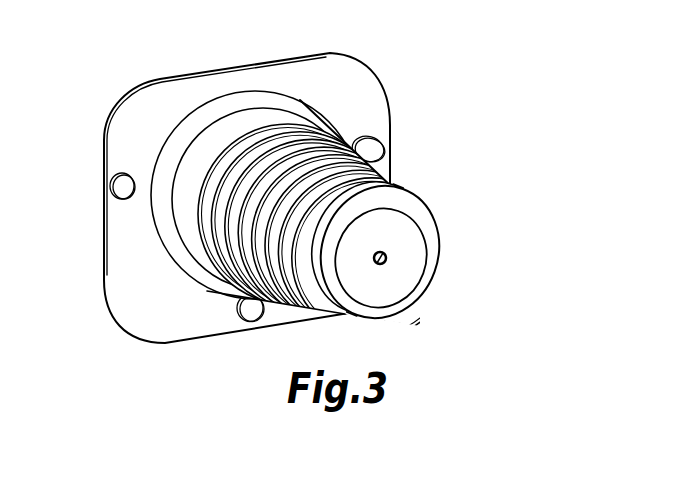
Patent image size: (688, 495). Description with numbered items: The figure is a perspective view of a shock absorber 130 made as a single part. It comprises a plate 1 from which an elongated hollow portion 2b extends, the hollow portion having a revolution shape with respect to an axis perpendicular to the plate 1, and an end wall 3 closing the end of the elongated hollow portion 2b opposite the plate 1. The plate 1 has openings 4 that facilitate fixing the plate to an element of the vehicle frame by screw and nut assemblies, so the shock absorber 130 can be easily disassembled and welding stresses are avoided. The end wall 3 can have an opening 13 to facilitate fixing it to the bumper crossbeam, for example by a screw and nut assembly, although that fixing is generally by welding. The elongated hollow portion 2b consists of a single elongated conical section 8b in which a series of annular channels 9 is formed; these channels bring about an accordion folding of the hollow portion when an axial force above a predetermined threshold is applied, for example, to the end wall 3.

The plate 1 is at (216, 196).
The shock absorber 130 is at (258, 218).
The elongated hollow portion 2b is at (405, 182).
The end wall 3 is at (410, 259).
The openings 4 is at (113, 190).
The opening 13 is at (381, 262).
The elongated conical section 8b is at (255, 246).
The annular channels 9 is at (287, 282).